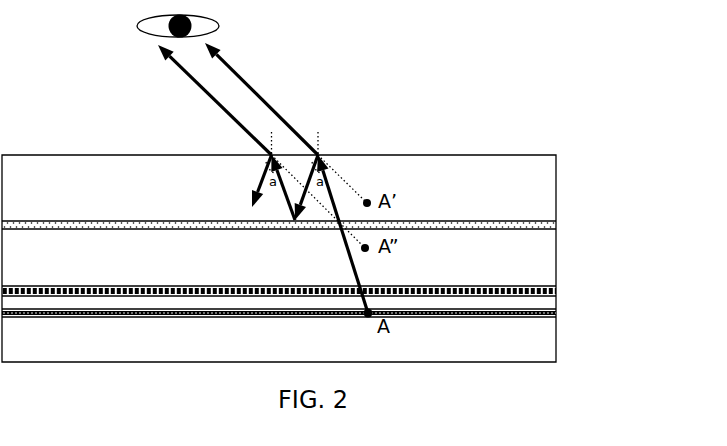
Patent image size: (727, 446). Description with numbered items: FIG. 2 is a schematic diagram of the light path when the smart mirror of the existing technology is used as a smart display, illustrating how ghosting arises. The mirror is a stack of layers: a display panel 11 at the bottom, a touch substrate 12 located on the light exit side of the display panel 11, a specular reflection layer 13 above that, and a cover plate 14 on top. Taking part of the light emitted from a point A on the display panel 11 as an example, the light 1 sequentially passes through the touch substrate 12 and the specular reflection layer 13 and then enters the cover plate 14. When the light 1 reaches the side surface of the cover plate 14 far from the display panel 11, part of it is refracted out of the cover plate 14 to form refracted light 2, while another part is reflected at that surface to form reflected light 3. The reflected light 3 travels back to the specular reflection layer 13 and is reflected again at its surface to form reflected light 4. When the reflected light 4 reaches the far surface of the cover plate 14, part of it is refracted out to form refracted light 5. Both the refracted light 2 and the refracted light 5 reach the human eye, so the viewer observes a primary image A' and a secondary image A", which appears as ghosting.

The light 1 is at (333, 199).
The refracted light 2 is at (287, 104).
The reflected light 3 is at (308, 182).
The reflected light 4 is at (288, 205).
The refracted light 5 is at (228, 113).
The display panel 11 is at (558, 298).
The touch substrate 12 is at (558, 231).
The specular reflection layer 13 is at (558, 224).
The cover plate 14 is at (558, 184).